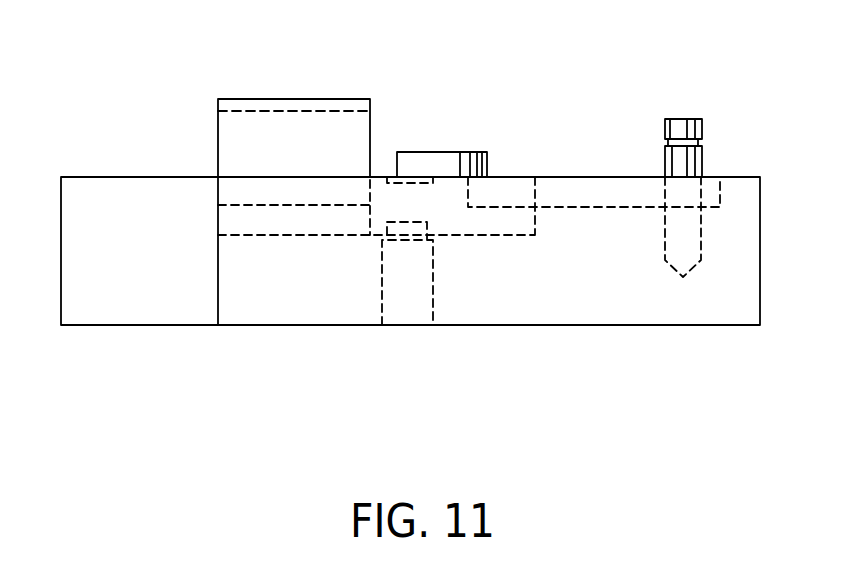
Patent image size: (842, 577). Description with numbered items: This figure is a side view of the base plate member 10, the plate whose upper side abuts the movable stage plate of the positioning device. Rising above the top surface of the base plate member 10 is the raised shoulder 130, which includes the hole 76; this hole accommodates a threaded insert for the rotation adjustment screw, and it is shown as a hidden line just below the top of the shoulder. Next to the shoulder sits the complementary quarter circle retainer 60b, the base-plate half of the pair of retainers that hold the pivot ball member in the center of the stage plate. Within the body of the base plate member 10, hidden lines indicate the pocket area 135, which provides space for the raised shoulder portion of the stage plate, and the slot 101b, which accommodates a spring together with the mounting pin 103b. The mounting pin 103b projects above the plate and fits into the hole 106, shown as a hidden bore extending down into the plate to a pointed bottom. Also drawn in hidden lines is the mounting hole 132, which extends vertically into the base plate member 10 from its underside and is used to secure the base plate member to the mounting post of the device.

The base plate member 10 is at (61, 252).
The raised shoulder 130 is at (275, 97).
The hole 76 is at (340, 112).
The complementary quarter circle retainer 60b is at (455, 150).
The pocket area 135 is at (300, 235).
The slot 101b is at (548, 207).
The mounting hole 132 is at (432, 283).
The mounting pin 103b is at (683, 119).
The hole 106 is at (700, 232).